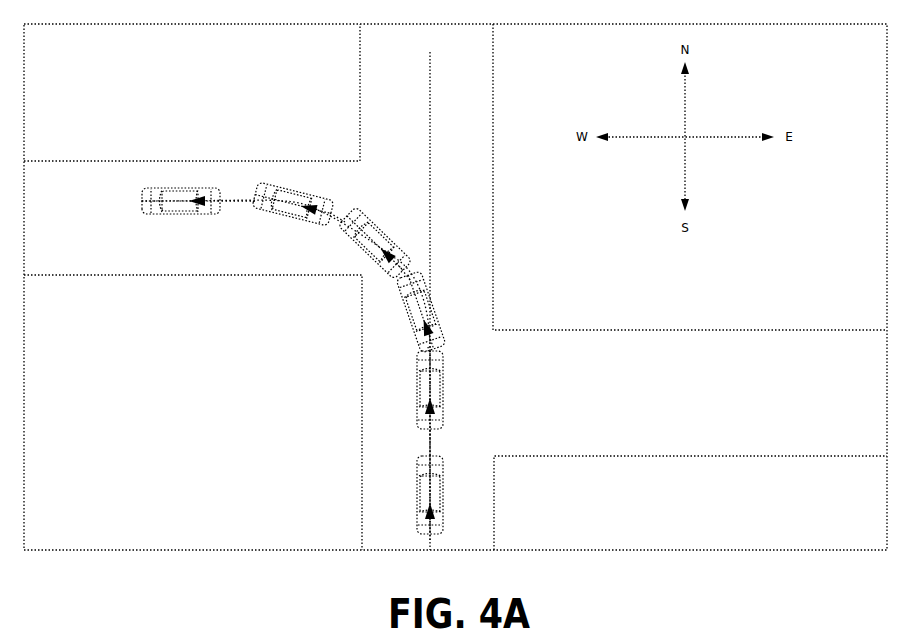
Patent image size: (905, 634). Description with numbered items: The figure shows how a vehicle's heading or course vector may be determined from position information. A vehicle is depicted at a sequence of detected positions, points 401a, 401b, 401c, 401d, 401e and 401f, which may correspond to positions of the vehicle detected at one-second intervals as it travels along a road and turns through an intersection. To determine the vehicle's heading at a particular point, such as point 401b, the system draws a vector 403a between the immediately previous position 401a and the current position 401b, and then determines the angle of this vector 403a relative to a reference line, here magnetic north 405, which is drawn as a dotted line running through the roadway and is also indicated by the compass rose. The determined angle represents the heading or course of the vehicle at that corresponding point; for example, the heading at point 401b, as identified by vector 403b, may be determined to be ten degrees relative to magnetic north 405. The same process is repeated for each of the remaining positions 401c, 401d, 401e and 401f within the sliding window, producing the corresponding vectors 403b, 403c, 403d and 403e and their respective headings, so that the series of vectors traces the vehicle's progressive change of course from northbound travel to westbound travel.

The point 401a is at (413, 487).
The point 401b is at (415, 400).
The point 401c is at (395, 320).
The point 401d is at (380, 222).
The point 401e is at (320, 193).
The point 401f is at (188, 190).
The vector 403a is at (433, 443).
The vector 403b is at (398, 356).
The vector 403c is at (405, 253).
The vector 403d is at (318, 234).
The vector 403e is at (212, 218).
The magnetic north 405 is at (438, 275).